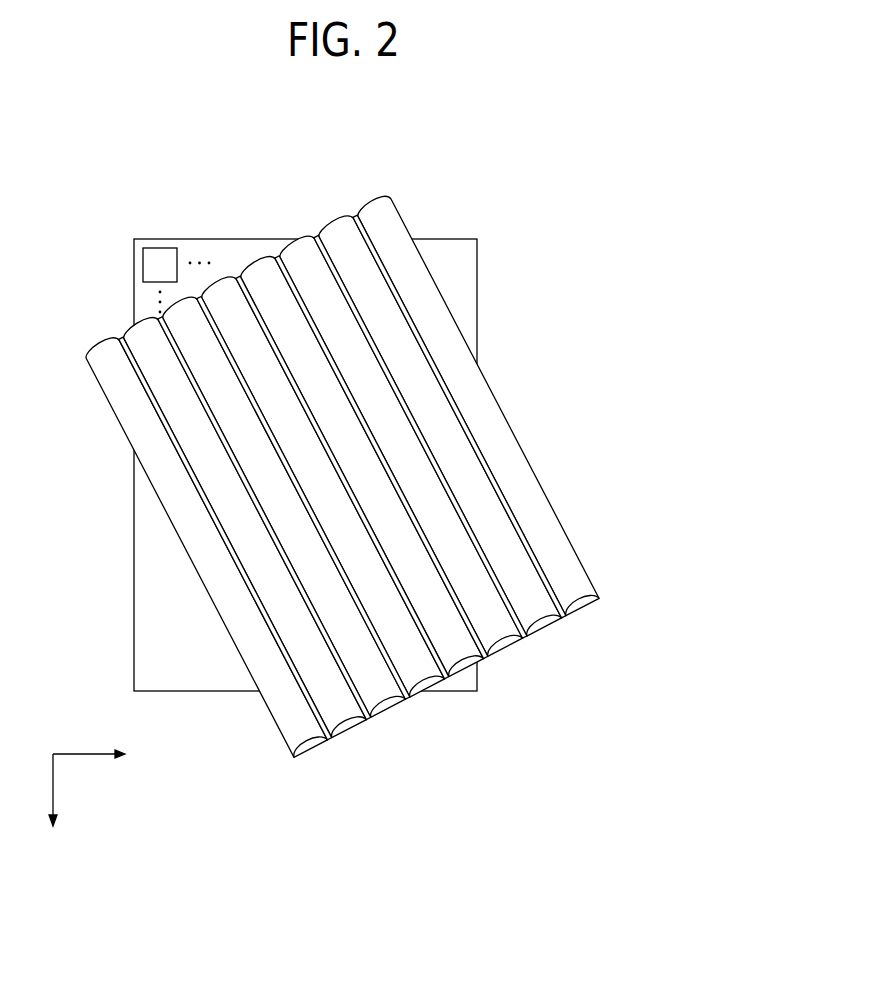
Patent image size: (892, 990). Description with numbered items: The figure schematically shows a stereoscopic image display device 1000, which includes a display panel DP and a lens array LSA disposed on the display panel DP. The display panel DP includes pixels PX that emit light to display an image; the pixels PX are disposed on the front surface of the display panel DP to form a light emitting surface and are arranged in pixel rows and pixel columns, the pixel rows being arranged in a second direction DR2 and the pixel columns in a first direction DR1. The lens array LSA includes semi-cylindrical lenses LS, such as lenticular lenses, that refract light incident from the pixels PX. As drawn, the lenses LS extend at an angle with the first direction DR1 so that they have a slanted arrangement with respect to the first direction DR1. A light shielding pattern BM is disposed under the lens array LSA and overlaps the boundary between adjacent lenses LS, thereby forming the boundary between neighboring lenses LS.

The stereoscopic image display device 1000 is at (342, 410).
The display panel DP is at (311, 432).
The pixel PX is at (176, 280).
The lens array LSA is at (342, 455).
The lens LS is at (378, 210).
The light shielding pattern BM is at (353, 218).
The first direction DR1 is at (108, 756).
The second direction DR2 is at (54, 806).